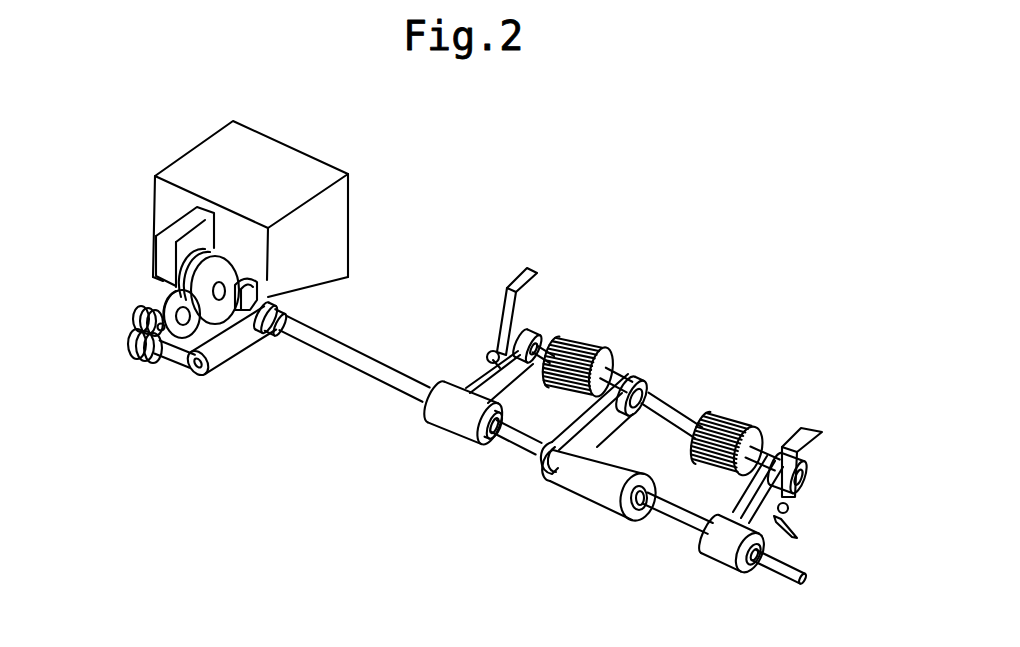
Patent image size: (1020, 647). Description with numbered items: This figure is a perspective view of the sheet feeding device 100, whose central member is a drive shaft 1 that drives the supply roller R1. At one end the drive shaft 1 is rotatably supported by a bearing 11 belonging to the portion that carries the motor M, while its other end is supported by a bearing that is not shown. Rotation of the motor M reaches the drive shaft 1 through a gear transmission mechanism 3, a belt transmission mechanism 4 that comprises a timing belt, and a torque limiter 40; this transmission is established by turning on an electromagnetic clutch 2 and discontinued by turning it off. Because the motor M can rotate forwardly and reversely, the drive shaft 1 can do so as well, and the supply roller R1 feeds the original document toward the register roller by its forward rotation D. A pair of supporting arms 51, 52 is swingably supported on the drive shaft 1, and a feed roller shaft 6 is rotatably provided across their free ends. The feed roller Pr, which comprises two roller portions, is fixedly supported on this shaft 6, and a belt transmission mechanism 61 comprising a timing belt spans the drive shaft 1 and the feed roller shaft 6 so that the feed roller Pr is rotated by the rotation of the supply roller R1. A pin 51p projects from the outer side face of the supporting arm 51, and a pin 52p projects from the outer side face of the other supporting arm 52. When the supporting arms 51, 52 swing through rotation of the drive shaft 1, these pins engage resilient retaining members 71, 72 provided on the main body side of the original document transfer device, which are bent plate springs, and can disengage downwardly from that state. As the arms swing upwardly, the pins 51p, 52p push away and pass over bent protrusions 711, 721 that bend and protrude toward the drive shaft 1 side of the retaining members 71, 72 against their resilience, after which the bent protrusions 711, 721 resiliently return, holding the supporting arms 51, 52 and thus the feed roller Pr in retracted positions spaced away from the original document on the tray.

The motor M is at (270, 141).
The sheet feeding device 100 is at (553, 228).
The electromagnetic clutch 2 is at (176, 266).
The gear transmission mechanism 3 is at (130, 315).
The bearing 11 is at (252, 278).
The torque limiter 40 is at (278, 304).
The belt transmission mechanism 4 is at (238, 360).
The drive shaft 1 is at (516, 437).
The supply roller R1 is at (584, 486).
The forward rotation D is at (659, 533).
The belt transmission mechanism 61 is at (643, 383).
The feed roller shaft 6 is at (668, 408).
The feed roller Pr is at (596, 349).
The supporting arm 51 is at (537, 332).
The resilient retaining member 71 is at (499, 304).
The pin 51p is at (489, 352).
The bent protrusion 711 is at (492, 364).
The supporting arm 52 is at (776, 454).
The resilient retaining member 72 is at (803, 452).
The pin 52p is at (793, 511).
The bent protrusion 721 is at (790, 526).